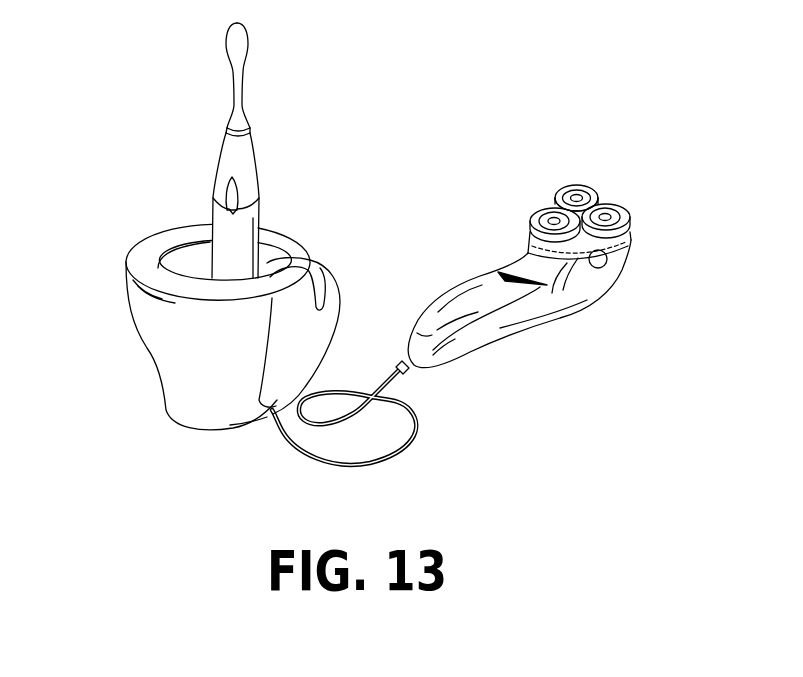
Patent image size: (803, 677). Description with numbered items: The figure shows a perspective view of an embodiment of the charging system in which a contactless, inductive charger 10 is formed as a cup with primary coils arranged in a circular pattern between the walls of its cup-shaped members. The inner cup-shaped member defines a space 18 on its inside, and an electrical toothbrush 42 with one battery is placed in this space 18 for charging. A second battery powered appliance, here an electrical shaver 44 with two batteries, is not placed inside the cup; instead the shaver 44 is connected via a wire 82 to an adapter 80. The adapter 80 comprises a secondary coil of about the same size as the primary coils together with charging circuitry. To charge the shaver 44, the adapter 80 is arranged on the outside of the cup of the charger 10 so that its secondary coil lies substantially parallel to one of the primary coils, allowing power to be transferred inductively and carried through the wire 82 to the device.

The contactless inductive charger 10 is at (141, 369).
The space 18 is at (185, 262).
The electrical toothbrush 42 is at (259, 130).
The electrical shaver 44 is at (624, 294).
The adapter 80 is at (342, 264).
The wire 82 is at (407, 450).